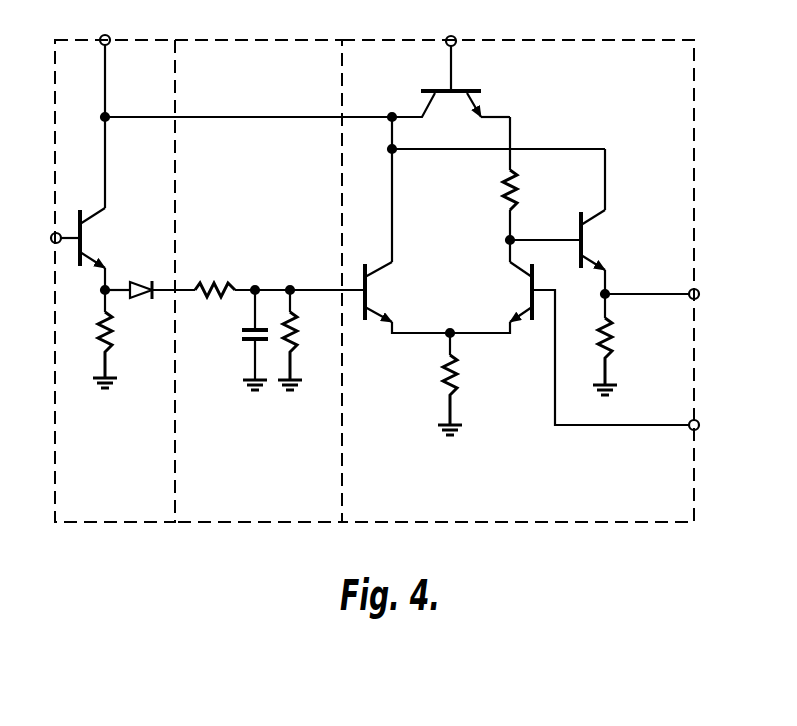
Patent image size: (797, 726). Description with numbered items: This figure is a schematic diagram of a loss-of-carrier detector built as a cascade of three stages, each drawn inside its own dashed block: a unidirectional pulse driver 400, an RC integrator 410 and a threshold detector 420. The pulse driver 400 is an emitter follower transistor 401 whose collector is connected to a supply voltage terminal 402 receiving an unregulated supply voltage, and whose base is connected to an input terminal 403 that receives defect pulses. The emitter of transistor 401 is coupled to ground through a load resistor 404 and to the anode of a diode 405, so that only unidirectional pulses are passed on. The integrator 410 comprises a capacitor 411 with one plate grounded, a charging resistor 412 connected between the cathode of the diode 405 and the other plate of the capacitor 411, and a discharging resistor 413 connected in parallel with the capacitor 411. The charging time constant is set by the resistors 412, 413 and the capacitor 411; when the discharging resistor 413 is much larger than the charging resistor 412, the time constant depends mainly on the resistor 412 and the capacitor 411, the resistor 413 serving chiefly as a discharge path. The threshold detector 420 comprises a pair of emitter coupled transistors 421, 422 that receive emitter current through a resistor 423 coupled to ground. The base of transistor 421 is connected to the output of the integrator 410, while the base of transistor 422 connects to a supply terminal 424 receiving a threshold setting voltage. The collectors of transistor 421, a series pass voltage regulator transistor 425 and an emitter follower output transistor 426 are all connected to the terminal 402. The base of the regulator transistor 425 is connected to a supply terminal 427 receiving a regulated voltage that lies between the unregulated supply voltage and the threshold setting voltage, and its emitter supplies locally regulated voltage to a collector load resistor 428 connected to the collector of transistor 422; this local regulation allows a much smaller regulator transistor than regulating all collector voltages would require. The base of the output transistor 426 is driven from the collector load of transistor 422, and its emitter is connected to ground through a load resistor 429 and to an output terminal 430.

The unidirectional pulse driver 400 is at (112, 522).
The emitter follower transistor 401 is at (131, 246).
The supply voltage terminal 402 is at (108, 46).
The input terminal 403 is at (58, 232).
The load resistor 404 is at (110, 330).
The diode 405 is at (150, 282).
The RC integrator 410 is at (265, 522).
The capacitor 411 is at (243, 336).
The charging resistor 412 is at (224, 271).
The discharging resistor 413 is at (297, 330).
The threshold detector 420 is at (525, 522).
The transistor 421 is at (414, 304).
The transistor 422 is at (514, 304).
The resistor 423 is at (455, 368).
The supply terminal 424 is at (690, 430).
The series pass voltage regulator transistor 425 is at (466, 141).
The emitter follower output transistor 426 is at (635, 253).
The supply terminal 427 is at (454, 47).
The collector load resistor 428 is at (505, 192).
The load resistor 429 is at (610, 338).
The output terminal 430 is at (692, 289).